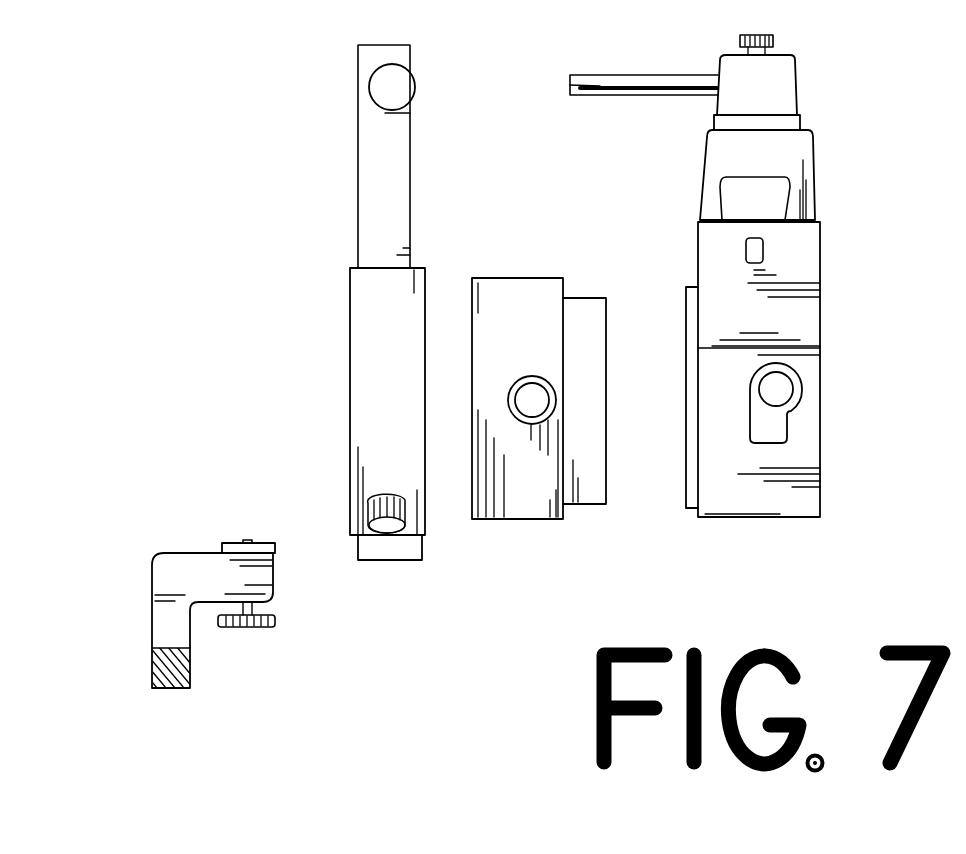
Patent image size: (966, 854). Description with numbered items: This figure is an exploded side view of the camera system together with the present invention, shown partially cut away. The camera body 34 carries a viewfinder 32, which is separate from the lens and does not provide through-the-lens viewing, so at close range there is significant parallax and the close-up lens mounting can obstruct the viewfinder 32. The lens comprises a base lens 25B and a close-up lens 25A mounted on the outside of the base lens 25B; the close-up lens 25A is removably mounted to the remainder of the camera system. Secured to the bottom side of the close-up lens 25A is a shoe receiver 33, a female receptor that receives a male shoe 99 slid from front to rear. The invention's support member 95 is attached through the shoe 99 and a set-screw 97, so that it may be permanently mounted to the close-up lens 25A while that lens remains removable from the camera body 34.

The close-up lens 25A is at (362, 348).
The base lens 25B is at (532, 292).
The viewfinder 32 is at (817, 184).
The shoe receiver 33 is at (410, 546).
The camera body 34 is at (820, 331).
The support member 95 is at (153, 672).
The set-screw 97 is at (228, 627).
The shoe 99 is at (232, 545).